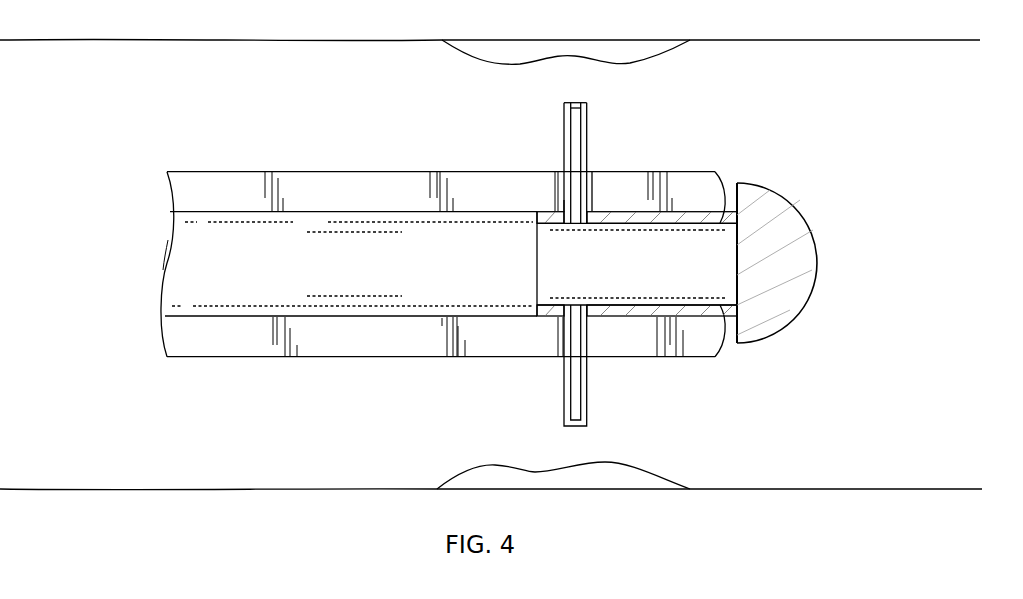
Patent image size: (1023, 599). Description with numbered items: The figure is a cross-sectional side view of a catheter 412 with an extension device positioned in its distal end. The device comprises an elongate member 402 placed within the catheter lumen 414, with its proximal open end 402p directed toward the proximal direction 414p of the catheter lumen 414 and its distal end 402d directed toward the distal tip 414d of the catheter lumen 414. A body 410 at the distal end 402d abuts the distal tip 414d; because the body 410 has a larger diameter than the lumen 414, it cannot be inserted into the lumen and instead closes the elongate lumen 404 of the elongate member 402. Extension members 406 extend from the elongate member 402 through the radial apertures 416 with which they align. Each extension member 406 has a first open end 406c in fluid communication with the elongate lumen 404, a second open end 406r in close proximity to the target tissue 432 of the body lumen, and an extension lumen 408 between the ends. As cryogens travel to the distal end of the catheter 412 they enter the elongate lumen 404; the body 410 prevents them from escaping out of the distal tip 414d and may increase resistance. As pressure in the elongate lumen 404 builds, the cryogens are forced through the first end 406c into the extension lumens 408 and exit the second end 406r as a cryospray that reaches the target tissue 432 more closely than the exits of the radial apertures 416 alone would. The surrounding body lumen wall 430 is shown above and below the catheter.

The elongate member 402 is at (638, 318).
The distal end of the elongate member 402d is at (728, 322).
The proximal open end of the elongate member 402p is at (530, 263).
The elongate lumen 404 is at (653, 274).
The extension members 406 is at (563, 130).
The first open end of the extension member 406c is at (561, 208).
The second open end of the extension member 406r is at (587, 103).
The extension lumen 408 is at (581, 135).
The body 410 is at (813, 228).
The catheter 412 is at (258, 171).
The catheter lumen 414 is at (322, 225).
The distal tip of the catheter lumen 414d is at (727, 242).
The proximal direction of the catheter lumen 414p is at (158, 258).
The radial apertures 416 is at (593, 192).
The upper tissue wall 430 is at (942, 40).
The target tissue 432 is at (658, 472).